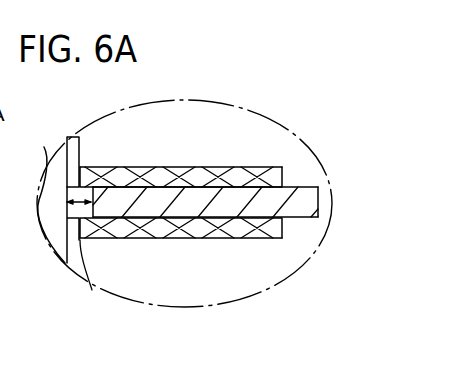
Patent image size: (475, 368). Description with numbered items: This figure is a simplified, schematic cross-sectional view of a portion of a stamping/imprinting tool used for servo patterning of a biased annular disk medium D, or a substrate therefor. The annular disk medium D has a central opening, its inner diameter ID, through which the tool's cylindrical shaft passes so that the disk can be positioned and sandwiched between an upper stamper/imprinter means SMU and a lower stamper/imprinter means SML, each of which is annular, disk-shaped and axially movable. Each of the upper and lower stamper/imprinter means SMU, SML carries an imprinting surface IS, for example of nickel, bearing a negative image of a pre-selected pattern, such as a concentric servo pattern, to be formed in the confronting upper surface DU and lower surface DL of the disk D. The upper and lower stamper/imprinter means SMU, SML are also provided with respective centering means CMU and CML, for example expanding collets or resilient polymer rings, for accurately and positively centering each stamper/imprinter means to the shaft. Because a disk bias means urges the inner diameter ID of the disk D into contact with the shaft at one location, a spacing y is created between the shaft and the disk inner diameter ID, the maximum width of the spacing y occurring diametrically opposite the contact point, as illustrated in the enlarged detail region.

The upper centering means CMU is at (83, 154).
The lower centering means CML is at (65, 264).
The imprinting surface IS is at (200, 178).
The upper stamper/imprinter means SMU is at (256, 165).
The lower stamper/imprinter means SML is at (248, 239).
The upper surface of disk DU is at (295, 185).
The annular disk medium D is at (314, 185).
The lower surface of disk DL is at (298, 220).
The inner diameter ID is at (93, 200).
The spacing y is at (184, 203).